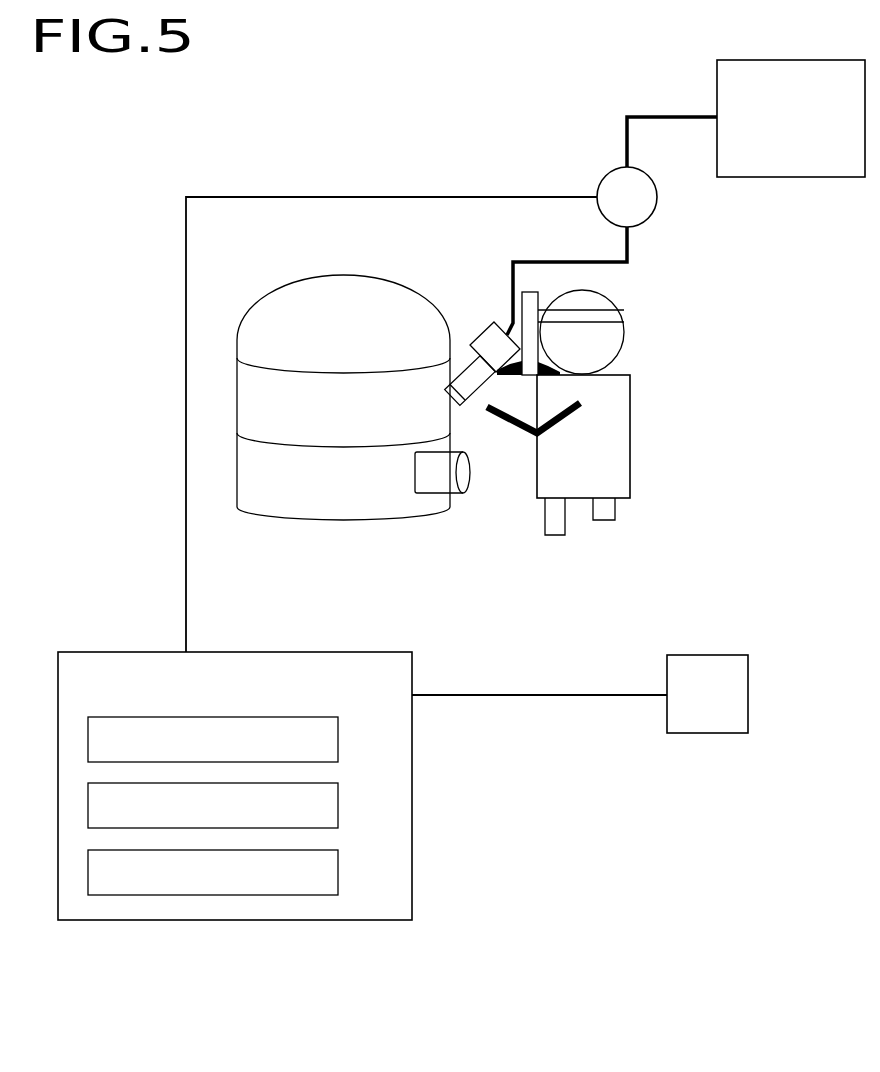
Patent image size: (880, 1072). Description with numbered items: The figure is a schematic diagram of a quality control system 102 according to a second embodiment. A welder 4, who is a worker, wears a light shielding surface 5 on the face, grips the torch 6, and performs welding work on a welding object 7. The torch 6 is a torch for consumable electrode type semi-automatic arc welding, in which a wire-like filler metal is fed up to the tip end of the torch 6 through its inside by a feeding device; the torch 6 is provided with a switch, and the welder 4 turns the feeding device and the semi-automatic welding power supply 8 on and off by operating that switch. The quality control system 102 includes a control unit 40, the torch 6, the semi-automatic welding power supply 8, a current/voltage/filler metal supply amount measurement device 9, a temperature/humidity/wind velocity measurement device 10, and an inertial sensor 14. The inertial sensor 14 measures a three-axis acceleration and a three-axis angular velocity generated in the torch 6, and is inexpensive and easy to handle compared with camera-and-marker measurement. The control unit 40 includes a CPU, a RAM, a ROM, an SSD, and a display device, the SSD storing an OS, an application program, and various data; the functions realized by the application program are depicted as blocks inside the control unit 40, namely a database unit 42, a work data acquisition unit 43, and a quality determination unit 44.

The welder 4 is at (576, 455).
The light shielding surface 5 is at (601, 332).
The torch 6 is at (473, 406).
The welding object 7 is at (353, 386).
The semi-automatic welding power supply 8 is at (791, 96).
The current/voltage/filler metal supply amount measurement device 9 is at (645, 197).
The temperature/humidity/wind velocity measurement device 10 is at (707, 670).
The inertial sensor 14 is at (480, 330).
The control unit 40 is at (235, 762).
The database unit 42 is at (236, 739).
The work data acquisition unit 43 is at (236, 805).
The quality determination unit 44 is at (236, 872).
The quality control system 102 is at (560, 790).